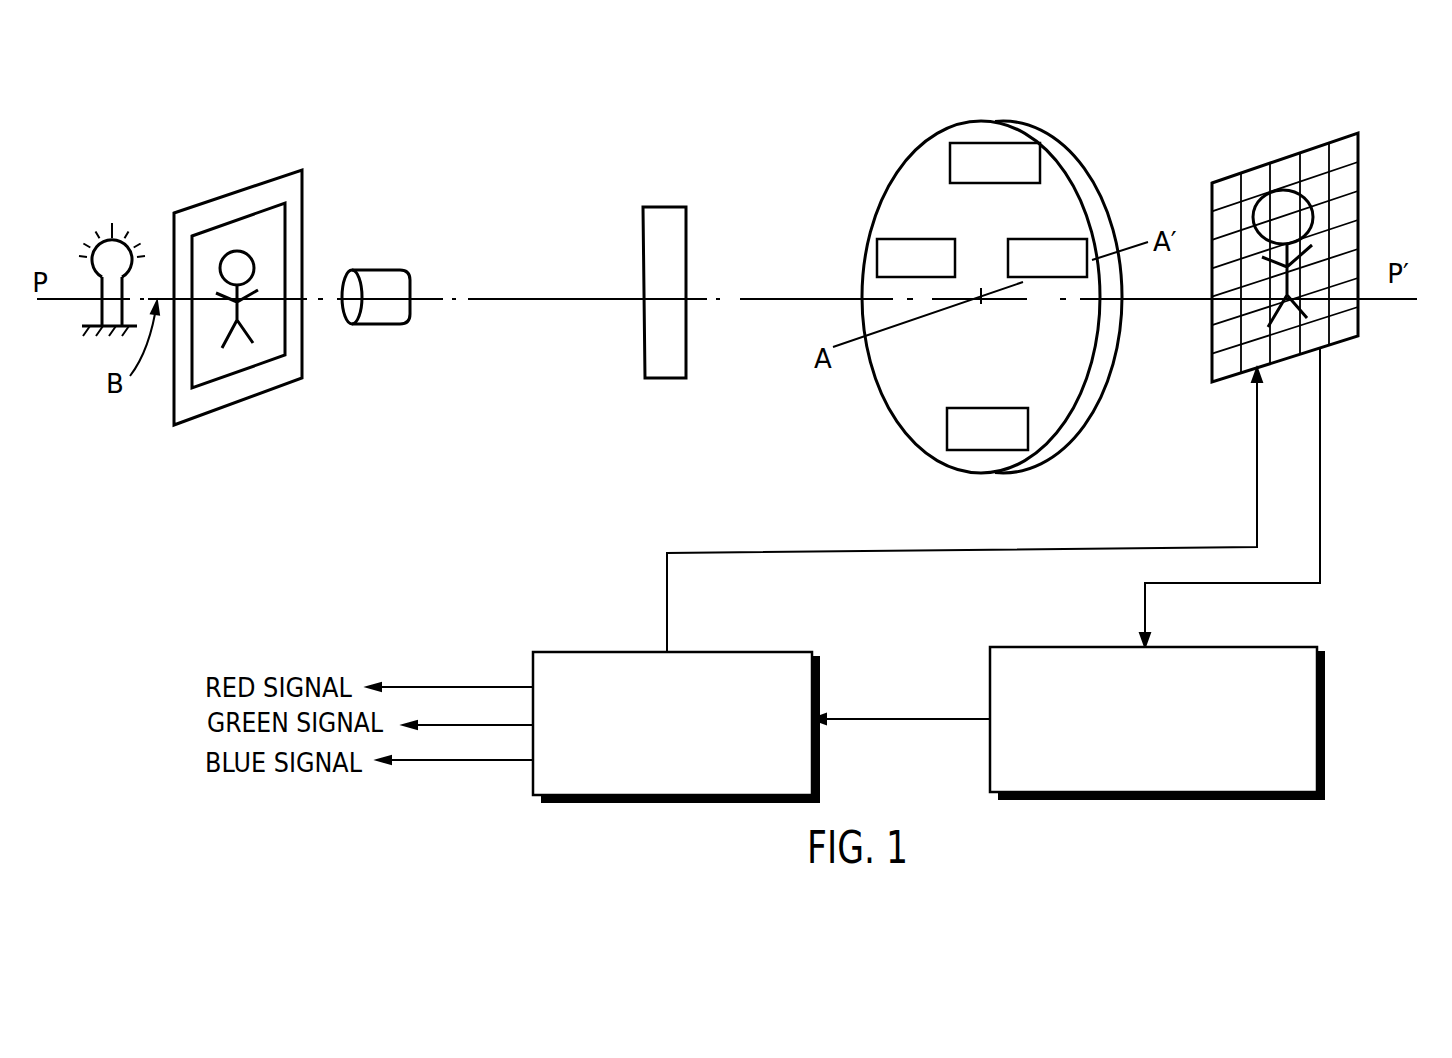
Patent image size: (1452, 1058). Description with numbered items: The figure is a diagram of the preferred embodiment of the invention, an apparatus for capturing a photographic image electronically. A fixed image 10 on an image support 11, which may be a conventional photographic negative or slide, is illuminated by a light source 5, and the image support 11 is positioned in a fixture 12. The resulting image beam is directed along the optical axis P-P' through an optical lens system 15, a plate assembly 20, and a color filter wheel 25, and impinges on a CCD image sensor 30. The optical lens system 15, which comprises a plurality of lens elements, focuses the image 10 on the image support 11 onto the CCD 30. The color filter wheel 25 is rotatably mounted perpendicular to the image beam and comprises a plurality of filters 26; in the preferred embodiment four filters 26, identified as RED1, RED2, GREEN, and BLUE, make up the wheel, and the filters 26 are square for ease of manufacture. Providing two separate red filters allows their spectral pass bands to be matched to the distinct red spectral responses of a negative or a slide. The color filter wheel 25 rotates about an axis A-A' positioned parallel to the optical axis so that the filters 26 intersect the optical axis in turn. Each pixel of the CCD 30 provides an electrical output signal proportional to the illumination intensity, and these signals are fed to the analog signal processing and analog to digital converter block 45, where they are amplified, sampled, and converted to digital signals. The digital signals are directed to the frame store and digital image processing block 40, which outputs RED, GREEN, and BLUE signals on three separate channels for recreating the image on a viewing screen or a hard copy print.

The light source 5 is at (112, 261).
The fixed image 10 is at (252, 257).
The image support 11 is at (267, 207).
The fixture 12 is at (230, 196).
The optical lens system 15 is at (380, 327).
The plate assembly 20 is at (634, 215).
The color filter wheel 25 is at (1090, 172).
The filters 26 is at (997, 408).
The CCD image sensor 30 is at (1237, 172).
The frame store and digital image processing block 40 is at (598, 652).
The analog signal processing and analog to digital converter block 45 is at (1235, 646).